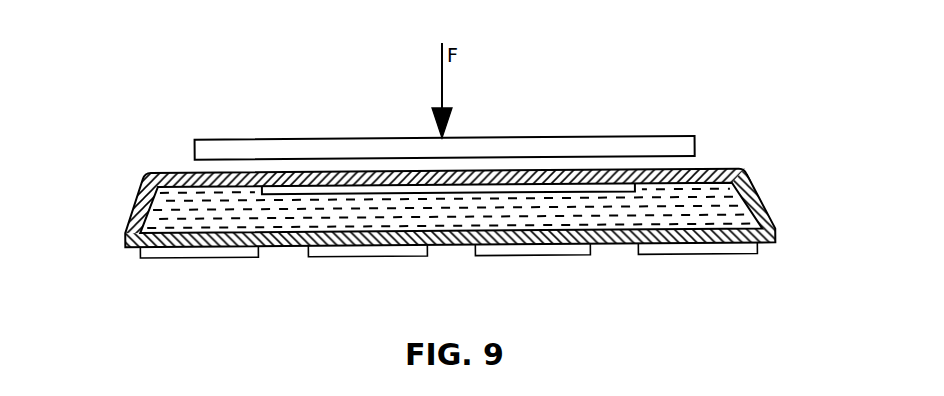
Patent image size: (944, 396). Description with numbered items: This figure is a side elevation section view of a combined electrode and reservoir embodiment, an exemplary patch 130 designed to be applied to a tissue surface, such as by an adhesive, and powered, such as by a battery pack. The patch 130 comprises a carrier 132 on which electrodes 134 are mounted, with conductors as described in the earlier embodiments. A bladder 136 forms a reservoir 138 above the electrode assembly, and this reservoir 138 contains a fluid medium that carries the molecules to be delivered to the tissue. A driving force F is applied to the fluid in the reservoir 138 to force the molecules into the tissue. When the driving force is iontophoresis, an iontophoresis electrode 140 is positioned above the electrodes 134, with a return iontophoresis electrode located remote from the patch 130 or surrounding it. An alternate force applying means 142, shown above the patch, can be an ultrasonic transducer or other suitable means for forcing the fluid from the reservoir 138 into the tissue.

The patch 130 is at (474, 196).
The carrier 132 is at (717, 248).
The electrodes 134 is at (355, 259).
The bladder 136 is at (725, 173).
The reservoir 138 is at (162, 205).
The iontophoresis electrode 140 is at (563, 191).
The alternate force applying means 142 is at (316, 142).